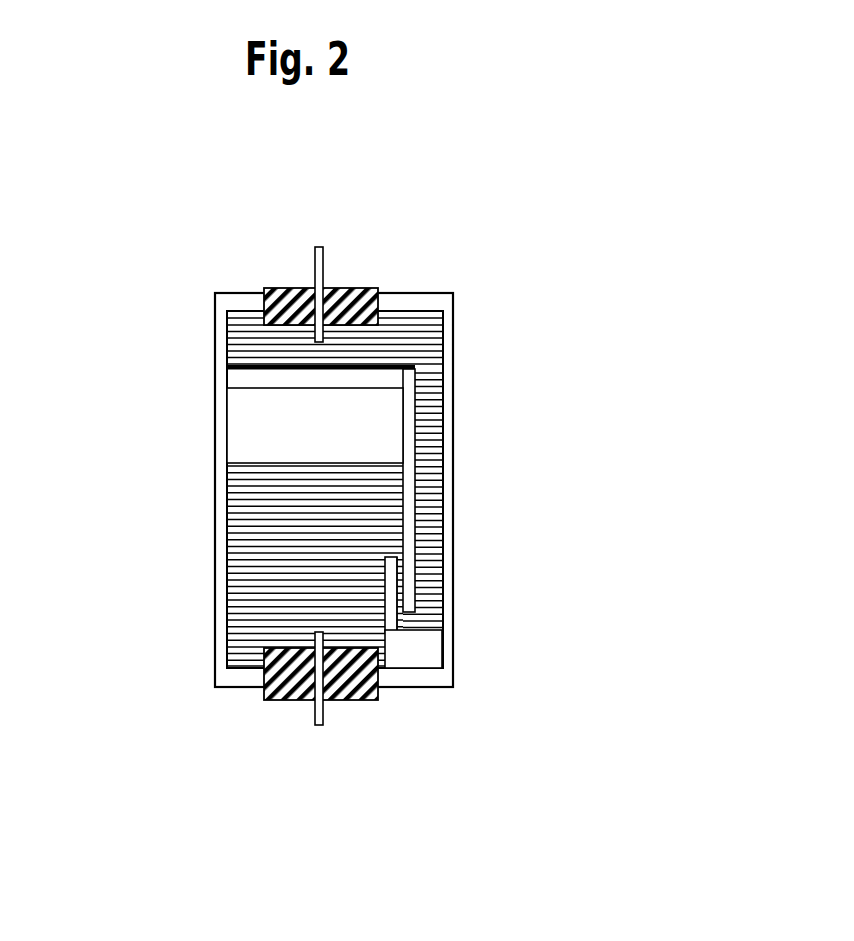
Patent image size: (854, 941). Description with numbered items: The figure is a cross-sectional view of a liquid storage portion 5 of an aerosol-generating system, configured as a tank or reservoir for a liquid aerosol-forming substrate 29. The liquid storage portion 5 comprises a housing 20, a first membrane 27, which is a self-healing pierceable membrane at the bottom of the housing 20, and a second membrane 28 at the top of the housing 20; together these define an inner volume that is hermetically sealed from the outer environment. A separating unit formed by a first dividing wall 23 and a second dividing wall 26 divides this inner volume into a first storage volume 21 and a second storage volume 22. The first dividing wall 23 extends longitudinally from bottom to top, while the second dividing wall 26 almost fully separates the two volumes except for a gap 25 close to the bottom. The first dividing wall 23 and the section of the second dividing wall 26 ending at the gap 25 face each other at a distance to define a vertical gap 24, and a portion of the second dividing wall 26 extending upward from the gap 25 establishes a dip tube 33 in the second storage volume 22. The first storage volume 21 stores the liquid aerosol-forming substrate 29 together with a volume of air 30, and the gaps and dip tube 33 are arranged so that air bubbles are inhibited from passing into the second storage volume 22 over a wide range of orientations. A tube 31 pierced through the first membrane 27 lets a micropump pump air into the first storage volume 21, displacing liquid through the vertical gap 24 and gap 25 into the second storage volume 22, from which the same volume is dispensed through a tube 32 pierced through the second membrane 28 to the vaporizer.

The liquid storage portion 5 is at (528, 277).
The housing 20 is at (225, 327).
The first storage volume 21 is at (234, 490).
The second storage volume 22 is at (421, 349).
The first dividing wall 23 is at (390, 605).
The vertical gap 24 is at (402, 565).
The gap 25 is at (410, 617).
The second dividing wall 26 is at (410, 425).
The first membrane 27 is at (378, 700).
The second membrane 28 is at (265, 287).
The liquid aerosol-forming substrate 29 is at (242, 577).
The air 30 is at (235, 412).
The tube 31 is at (322, 725).
The tube 32 is at (313, 247).
The dip tube 33 is at (425, 520).